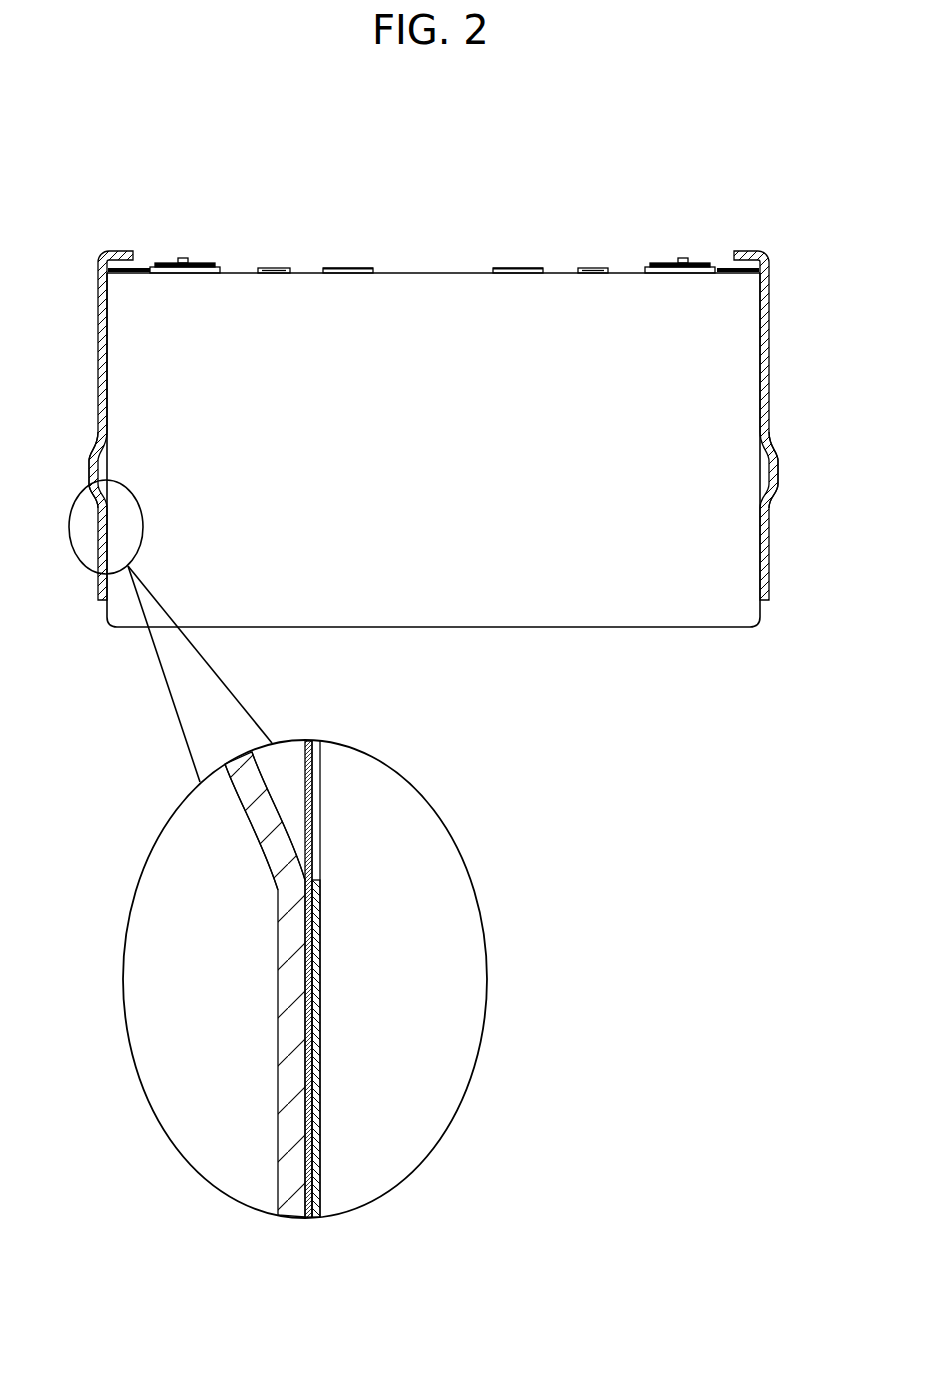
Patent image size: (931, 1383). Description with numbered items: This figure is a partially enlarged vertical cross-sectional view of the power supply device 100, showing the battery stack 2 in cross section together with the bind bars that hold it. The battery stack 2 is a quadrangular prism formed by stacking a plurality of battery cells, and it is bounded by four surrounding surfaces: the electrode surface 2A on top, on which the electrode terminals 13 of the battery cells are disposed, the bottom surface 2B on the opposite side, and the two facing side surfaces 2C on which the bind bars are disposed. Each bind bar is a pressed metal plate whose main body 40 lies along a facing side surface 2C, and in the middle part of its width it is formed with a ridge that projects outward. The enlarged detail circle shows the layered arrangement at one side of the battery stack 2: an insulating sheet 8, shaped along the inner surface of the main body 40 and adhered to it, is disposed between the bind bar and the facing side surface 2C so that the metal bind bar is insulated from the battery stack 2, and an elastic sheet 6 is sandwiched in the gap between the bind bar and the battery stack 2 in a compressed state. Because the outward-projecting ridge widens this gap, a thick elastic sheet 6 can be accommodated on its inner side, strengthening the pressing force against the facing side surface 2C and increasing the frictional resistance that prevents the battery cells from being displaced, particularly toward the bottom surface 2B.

The power supply device 100 is at (692, 170).
The battery stack 2 is at (562, 228).
The electrode surface 2A is at (433, 273).
The bottom surface 2B is at (433, 627).
The facing side surface 2C is at (101, 355).
The main body 40 is at (288, 1045).
The elastic sheet 6 is at (318, 1043).
The insulating sheet 8 is at (312, 830).
The electrode terminal 13 is at (183, 258).